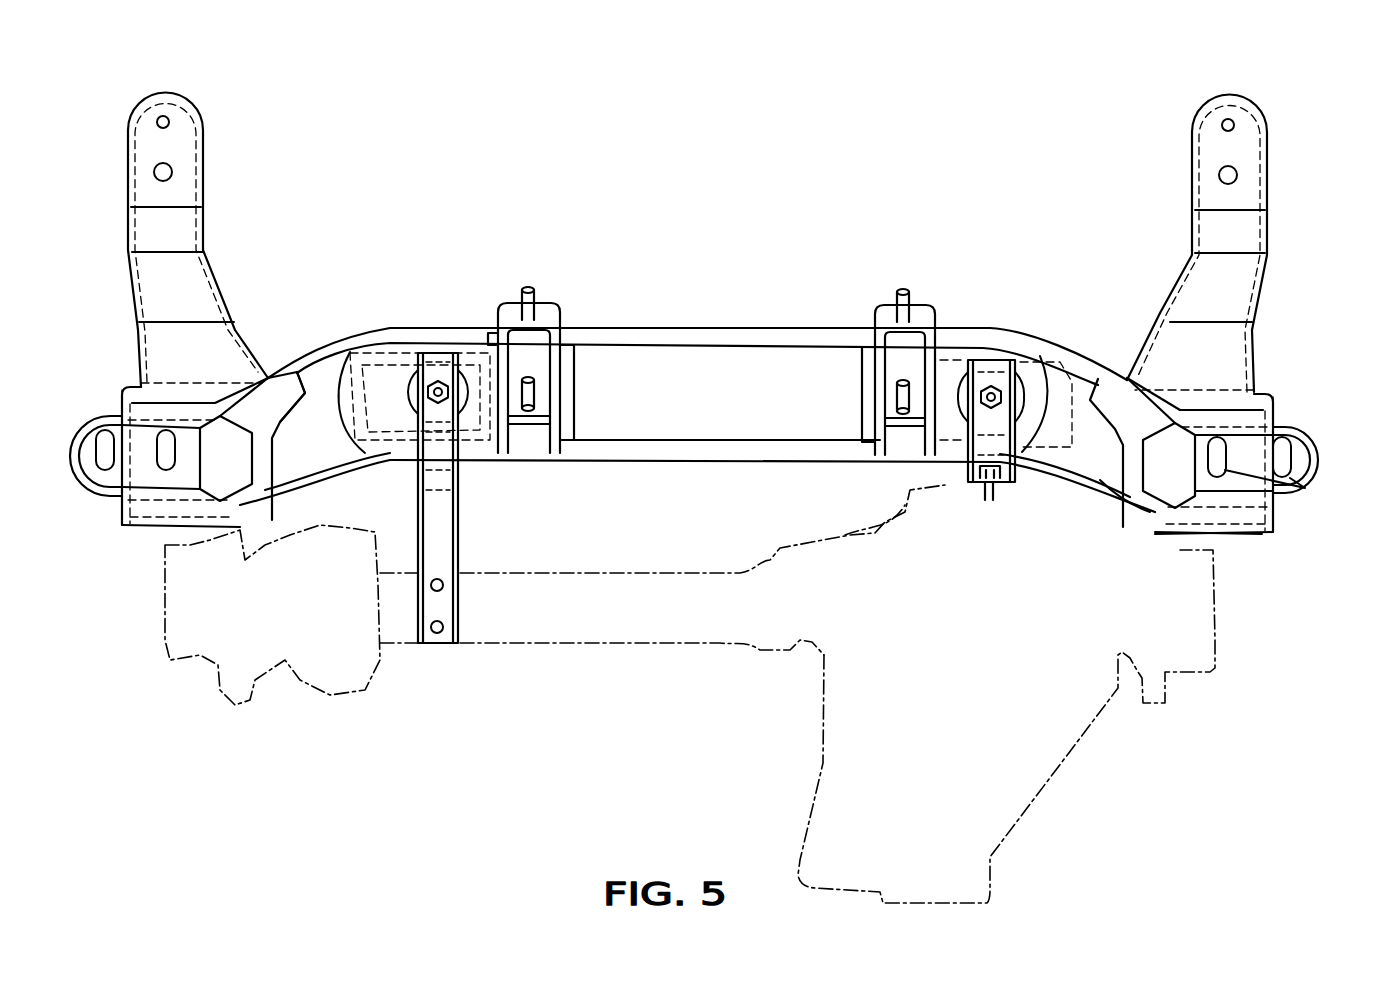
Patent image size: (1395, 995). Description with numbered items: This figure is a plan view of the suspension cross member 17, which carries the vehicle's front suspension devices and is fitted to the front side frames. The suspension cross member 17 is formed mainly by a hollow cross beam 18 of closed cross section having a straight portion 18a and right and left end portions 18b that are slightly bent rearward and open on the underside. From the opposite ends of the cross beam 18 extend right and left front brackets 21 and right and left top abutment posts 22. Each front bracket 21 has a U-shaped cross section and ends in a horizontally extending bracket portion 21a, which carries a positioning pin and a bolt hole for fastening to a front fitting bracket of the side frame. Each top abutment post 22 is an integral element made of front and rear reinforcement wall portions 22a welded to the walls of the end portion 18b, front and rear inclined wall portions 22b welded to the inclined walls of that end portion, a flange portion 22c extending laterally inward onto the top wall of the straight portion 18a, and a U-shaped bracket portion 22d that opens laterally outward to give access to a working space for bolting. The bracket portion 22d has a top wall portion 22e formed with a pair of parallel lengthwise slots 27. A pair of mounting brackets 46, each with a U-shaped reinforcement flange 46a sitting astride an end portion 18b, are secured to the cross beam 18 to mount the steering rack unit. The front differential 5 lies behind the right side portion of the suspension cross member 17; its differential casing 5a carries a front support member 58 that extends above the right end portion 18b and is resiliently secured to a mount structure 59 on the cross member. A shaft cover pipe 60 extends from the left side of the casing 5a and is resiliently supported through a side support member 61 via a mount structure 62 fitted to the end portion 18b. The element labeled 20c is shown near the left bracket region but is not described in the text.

The front differential 5 is at (790, 785).
The differential casing 5a is at (822, 712).
The suspension cross member 17 is at (965, 128).
The cross beam 18 is at (755, 333).
The straight portion 18a is at (630, 428).
The end portion 18b is at (403, 345).
The gusset 20c is at (265, 463).
The front bracket 21 is at (222, 288).
The bracket portion 21a is at (1250, 130).
The top abutment post 22 is at (106, 416).
The reinforcement wall portion 22a is at (1258, 398).
The inclined wall portion 22b is at (1190, 412).
The flange portion 22c is at (1118, 492).
The bracket portion 22d is at (1235, 522).
The top wall portion 22e is at (143, 478).
The slot 27 is at (1305, 488).
The mounting bracket 46 is at (545, 306).
The reinforcement flange 46a is at (983, 346).
The front support member 58 is at (958, 482).
The mount structure 59 is at (1027, 405).
The shaft cover pipe 60 is at (605, 645).
The side support member 61 is at (460, 547).
The mount structure 62 is at (458, 355).